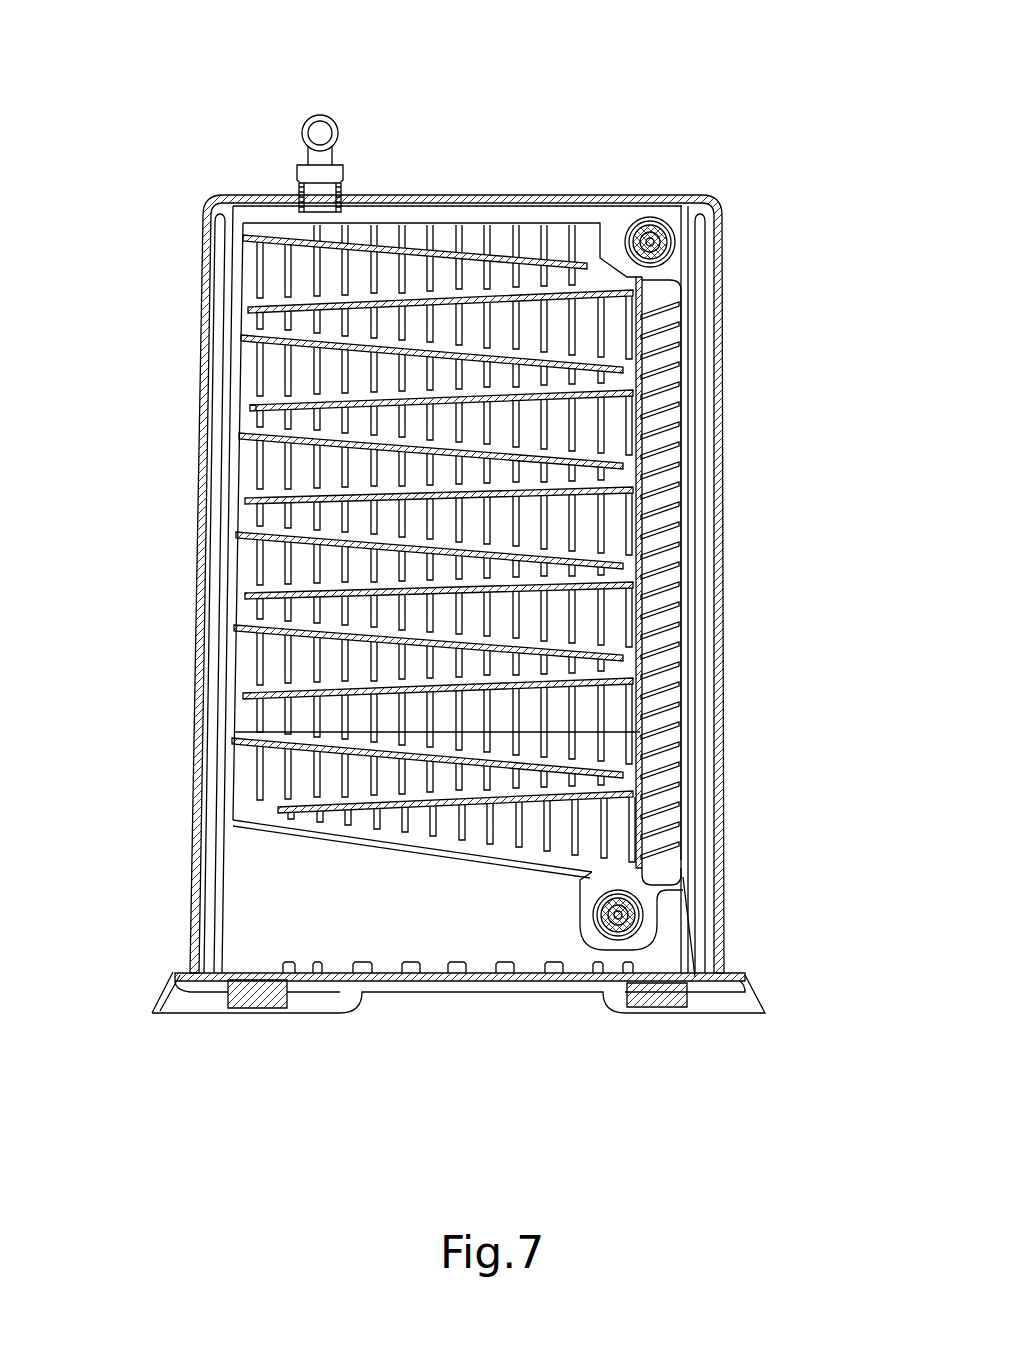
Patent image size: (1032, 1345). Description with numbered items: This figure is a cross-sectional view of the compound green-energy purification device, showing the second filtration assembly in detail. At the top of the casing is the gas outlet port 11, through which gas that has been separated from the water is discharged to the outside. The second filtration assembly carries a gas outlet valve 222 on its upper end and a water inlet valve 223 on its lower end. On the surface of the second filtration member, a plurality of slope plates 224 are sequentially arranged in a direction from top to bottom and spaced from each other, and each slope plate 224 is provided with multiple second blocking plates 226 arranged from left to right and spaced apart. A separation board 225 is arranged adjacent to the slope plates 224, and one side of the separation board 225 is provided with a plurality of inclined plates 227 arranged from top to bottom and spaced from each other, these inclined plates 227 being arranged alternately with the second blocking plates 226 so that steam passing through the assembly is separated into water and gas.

The gas outlet port 11 is at (334, 122).
The gas outlet valve 222 is at (674, 236).
The water inlet valve 223 is at (620, 914).
The slope plates 224 is at (320, 402).
The separation board 225 is at (642, 303).
The second blocking plates 226 is at (665, 340).
The inclined plates 227 is at (668, 363).